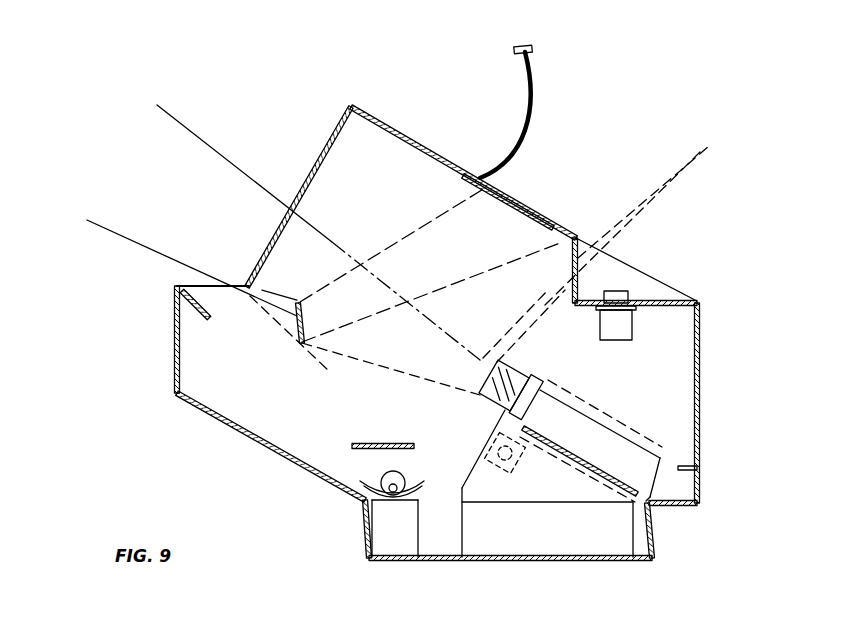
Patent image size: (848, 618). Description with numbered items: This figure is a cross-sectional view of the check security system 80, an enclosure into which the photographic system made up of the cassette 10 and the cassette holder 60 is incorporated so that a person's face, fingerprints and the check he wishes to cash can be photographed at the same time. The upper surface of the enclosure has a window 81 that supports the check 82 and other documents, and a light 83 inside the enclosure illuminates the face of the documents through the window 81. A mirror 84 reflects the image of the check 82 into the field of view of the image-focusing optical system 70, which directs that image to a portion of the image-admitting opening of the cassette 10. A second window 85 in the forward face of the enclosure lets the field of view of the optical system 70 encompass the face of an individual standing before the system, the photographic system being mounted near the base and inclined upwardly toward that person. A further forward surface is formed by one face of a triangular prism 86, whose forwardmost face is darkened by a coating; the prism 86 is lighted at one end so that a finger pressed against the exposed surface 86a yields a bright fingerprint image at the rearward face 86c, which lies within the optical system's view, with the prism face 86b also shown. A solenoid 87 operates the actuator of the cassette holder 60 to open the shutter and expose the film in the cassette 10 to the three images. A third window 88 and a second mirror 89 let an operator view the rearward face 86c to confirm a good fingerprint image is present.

The check security system 80 is at (388, 102).
The window 81 is at (505, 183).
The check 82 is at (552, 215).
The second window 85 is at (262, 238).
The triangular prism 86 is at (180, 297).
The exposed surface 86a is at (200, 286).
The mirror 86b is at (192, 311).
The rearward face 86c is at (240, 320).
The mirror 84 is at (300, 340).
The third window 88 is at (580, 282).
The image-focusing optical system 70 is at (505, 370).
The cassette holder 60 is at (547, 390).
The cassette 10 is at (624, 439).
The solenoid 87 is at (522, 466).
The second mirror 89 is at (376, 449).
The light 83 is at (428, 474).